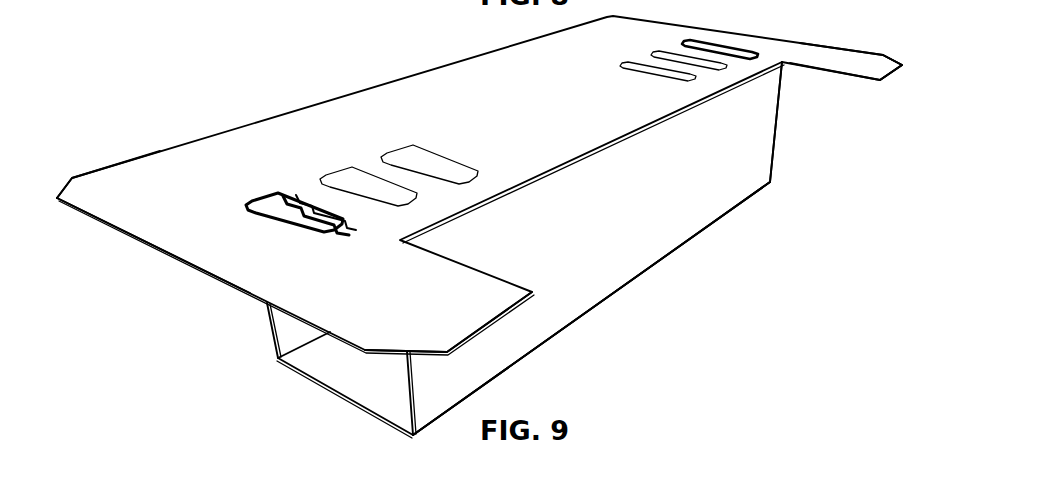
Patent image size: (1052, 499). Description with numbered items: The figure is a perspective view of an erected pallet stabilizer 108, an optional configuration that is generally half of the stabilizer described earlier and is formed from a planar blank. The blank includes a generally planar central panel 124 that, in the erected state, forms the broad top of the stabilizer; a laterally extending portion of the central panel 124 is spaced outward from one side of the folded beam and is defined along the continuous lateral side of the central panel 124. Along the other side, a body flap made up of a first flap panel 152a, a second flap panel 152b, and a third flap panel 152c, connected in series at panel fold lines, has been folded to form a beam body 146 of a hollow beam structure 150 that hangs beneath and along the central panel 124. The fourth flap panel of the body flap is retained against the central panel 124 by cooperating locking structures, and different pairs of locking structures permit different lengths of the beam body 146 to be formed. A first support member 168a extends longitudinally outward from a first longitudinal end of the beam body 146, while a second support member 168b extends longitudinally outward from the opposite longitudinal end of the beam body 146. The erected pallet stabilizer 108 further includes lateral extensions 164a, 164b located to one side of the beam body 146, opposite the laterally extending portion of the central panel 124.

The pallet stabilizer 108 is at (443, 29).
The central panel 124 is at (430, 103).
The beam body 146 is at (563, 323).
The hollow beam structure 150 is at (703, 249).
The first flap panel 152a is at (593, 293).
The second flap panel 152b is at (357, 387).
The third flap panel 152c is at (270, 337).
The lateral extension 164a is at (467, 312).
The lateral extension 164b is at (863, 67).
The first support member 168a is at (201, 253).
The second support member 168b is at (823, 49).